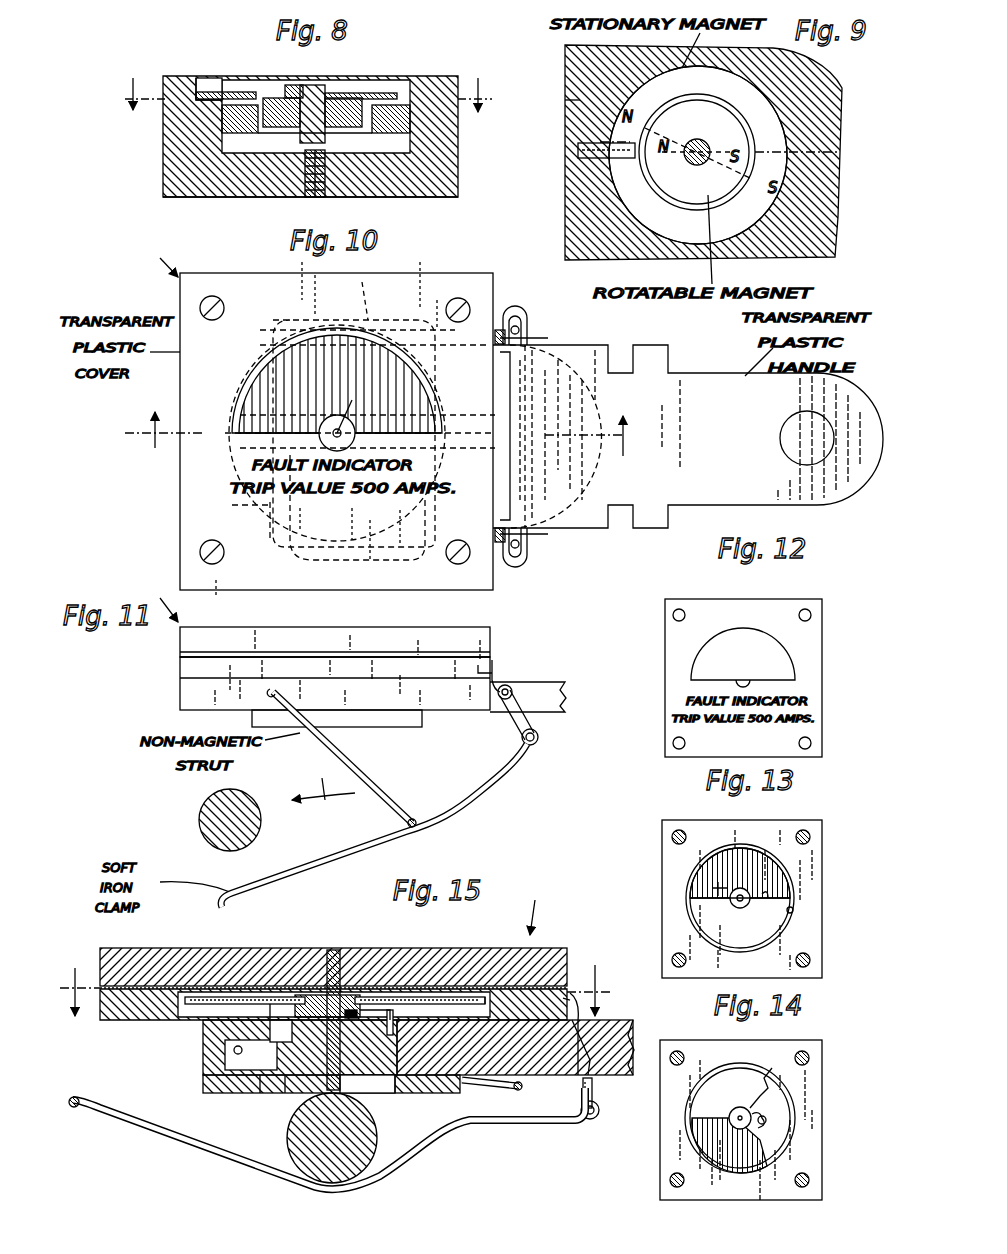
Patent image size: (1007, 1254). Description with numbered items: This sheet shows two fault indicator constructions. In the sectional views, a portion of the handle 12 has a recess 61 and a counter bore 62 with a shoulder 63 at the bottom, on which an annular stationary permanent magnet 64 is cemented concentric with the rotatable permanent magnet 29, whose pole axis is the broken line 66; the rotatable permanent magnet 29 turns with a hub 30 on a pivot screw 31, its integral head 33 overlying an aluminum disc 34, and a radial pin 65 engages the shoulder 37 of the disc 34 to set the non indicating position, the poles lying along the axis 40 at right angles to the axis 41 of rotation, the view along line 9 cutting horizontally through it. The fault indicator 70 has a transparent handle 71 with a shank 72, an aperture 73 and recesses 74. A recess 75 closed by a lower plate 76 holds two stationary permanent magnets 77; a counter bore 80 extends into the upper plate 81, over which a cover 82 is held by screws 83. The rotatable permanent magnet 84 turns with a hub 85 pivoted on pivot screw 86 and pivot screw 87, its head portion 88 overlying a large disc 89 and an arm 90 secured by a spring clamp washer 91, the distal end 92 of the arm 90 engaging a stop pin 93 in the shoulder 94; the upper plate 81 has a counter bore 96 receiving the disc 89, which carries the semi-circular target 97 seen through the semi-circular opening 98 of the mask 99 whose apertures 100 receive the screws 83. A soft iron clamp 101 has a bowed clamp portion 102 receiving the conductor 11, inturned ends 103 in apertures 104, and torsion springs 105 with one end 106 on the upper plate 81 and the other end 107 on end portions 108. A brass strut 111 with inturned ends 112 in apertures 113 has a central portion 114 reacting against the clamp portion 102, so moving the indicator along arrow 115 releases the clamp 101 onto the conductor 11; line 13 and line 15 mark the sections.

In FIG. 8, the section line 9— 9 is at (308, 86).
In FIG. 11, the conductor 11 is at (207, 804).
In FIG. 15, the conductor 11 is at (300, 1180).
In FIG. 8, the handle 12 is at (450, 78).
In FIG. 9, the handle 12 is at (840, 104).
In FIG. 15, the section line 13— 13 is at (335, 982).
In FIG. 10, the section line 15— 15 is at (384, 434).
In FIG. 8, the rotatable permanent magnet 29 is at (362, 100).
In FIG. 9, the rotatable permanent magnet 29 is at (740, 108).
In FIG. 8, the hub 30 is at (340, 98).
In FIG. 9, the hub 30 is at (689, 166).
In FIG. 8, the pivot screw 31 is at (300, 197).
In FIG. 8, the head 33 is at (320, 98).
In FIG. 8, the disc 34 is at (397, 92).
In FIG. 8, the shoulder 37 is at (243, 92).
In FIG. 9, the axis of north and south poles 40 is at (792, 172).
In FIG. 9, the axis of rotation 41 is at (704, 142).
In FIG. 8, the recess 61 is at (390, 197).
In FIG. 8, the counter bore 62 is at (418, 88).
In FIG. 9, the counter bore 62 is at (782, 152).
In FIG. 8, the shoulder 63 is at (440, 126).
In FIG. 8, the stationary permanent magnet 64 is at (222, 118).
In FIG. 9, the stationary permanent magnet 64 is at (778, 118).
In FIG. 8, the radial pin 65 is at (206, 90).
In FIG. 9, the radial pin 65 is at (578, 150).
In FIG. 9, the pole axis of stationary magnet 66 is at (573, 82).
In FIG. 10, the fault indicator 70 is at (160, 259).
In FIG. 11, the fault indicator 70 is at (160, 602).
In FIG. 15, the fault indicator 70 is at (535, 906).
In FIG. 10, the handle 71 is at (601, 345).
In FIG. 11, the handle 71 is at (556, 682).
In FIG. 15, the handle 71 is at (628, 1022).
In FIG. 10, the shank 72 is at (690, 378).
In FIG. 10, the aperture 73 is at (826, 425).
In FIG. 10, the recesses 74 is at (630, 348).
In FIG. 15, the recess 75 is at (378, 1093).
In FIG. 11, the lower plate 76 is at (388, 726).
In FIG. 15, the lower plate 76 is at (222, 1093).
In FIG. 15, the stationary permanent magnets 77 is at (282, 1093).
In FIG. 15, the counter bore 80 is at (258, 1093).
In FIG. 11, the upper plate 81 is at (185, 686).
In FIG. 13, the upper plate 81 is at (792, 822).
In FIG. 14, the upper plate 81 is at (798, 1040).
In FIG. 15, the upper plate 81 is at (112, 1020).
In FIG. 10, the cover 82 is at (440, 275).
In FIG. 11, the cover 82 is at (375, 637).
In FIG. 15, the cover 82 is at (516, 957).
In FIG. 10, the screws 83 is at (218, 300).
In FIG. 13, the screws 83 is at (678, 830).
In FIG. 14, the screws 83 is at (677, 1050).
In FIG. 15, the screws 83 is at (631, 945).
In FIG. 15, the rotatable permanent magnet 84 is at (372, 1005).
In FIG. 15, the hub 85 is at (338, 990).
In FIG. 15, the pivot screw 86 is at (370, 1110).
In FIG. 10, the pivot screw 87 is at (346, 416).
In FIG. 15, the pivot screw 87 is at (330, 994).
In FIG. 10, the head portion 88 is at (322, 420).
In FIG. 15, the head portion 88 is at (303, 997).
In FIG. 13, the disc 89 is at (700, 908).
In FIG. 14, the disc 89 is at (722, 1082).
In FIG. 15, the disc 89 is at (450, 997).
In FIG. 13, the arm 90 is at (728, 885).
In FIG. 14, the arm 90 is at (758, 1130).
In FIG. 15, the arm 90 is at (300, 1000).
In FIG. 15, the spring clamp washer 91 is at (388, 1010).
In FIG. 14, the distal end 92 is at (766, 1118).
In FIG. 15, the distal end 92 is at (220, 1038).
In FIG. 13, the stop pin 93 is at (780, 888).
In FIG. 14, the stop pin 93 is at (768, 1108).
In FIG. 15, the stop pin 93 is at (415, 1000).
In FIG. 15, the shoulder 94 is at (420, 1093).
In FIG. 13, the counter bore 96 is at (793, 910).
In FIG. 14, the counter bore 96 is at (782, 1090).
In FIG. 15, the counter bore 96 is at (486, 1000).
In FIG. 10, the semi-circular target 97 is at (272, 385).
In FIG. 13, the semi-circular target 97 is at (712, 872).
In FIG. 14, the semi-circular target 97 is at (710, 1138).
In FIG. 15, the semi-circular target 97 is at (636, 1160).
In FIG. 12, the semi-circular opening 98 is at (692, 652).
In FIG. 11, the mask 99 is at (310, 652).
In FIG. 12, the mask 99 is at (665, 662).
In FIG. 12, the apertures 100 is at (798, 615).
In FIG. 10, the clamp 101 is at (530, 558).
In FIG. 11, the clamp 101 is at (505, 760).
In FIG. 15, the clamp 101 is at (532, 1126).
In FIG. 11, the clamp portion 102 is at (440, 815).
In FIG. 15, the clamp portion 102 is at (365, 1195).
In FIG. 10, the ends 103 is at (530, 372).
In FIG. 15, the ends 103 is at (585, 1040).
In FIG. 10, the apertures 104 is at (535, 355).
In FIG. 10, the torsion springs 105 is at (520, 312).
In FIG. 11, the torsion springs 105 is at (512, 684).
In FIG. 15, the torsion springs 105 is at (596, 1090).
In FIG. 10, the spring end 106 is at (508, 310).
In FIG. 11, the spring end 106 is at (500, 665).
In FIG. 15, the spring end 106 is at (575, 992).
In FIG. 10, the spring end 107 is at (540, 339).
In FIG. 11, the spring end 107 is at (540, 740).
In FIG. 15, the spring end 107 is at (600, 1111).
In FIG. 10, the end portions 108 is at (532, 326).
In FIG. 11, the end portions 108 is at (540, 733).
In FIG. 15, the end portions 108 is at (588, 1125).
In FIG. 10, the strut 111 is at (326, 429).
In FIG. 11, the strut 111 is at (375, 774).
In FIG. 15, the strut 111 is at (482, 1088).
In FIG. 10, the inturned ends 112 is at (268, 325).
In FIG. 15, the inturned ends 112 is at (210, 1075).
In FIG. 10, the apertures 113 is at (246, 345).
In FIG. 15, the apertures 113 is at (205, 1055).
In FIG. 10, the central portion 114 is at (430, 345).
In FIG. 11, the central portion 114 is at (413, 815).
In FIG. 15, the central portion 114 is at (522, 1088).
In FIG. 11, the arrow 115 is at (323, 783).